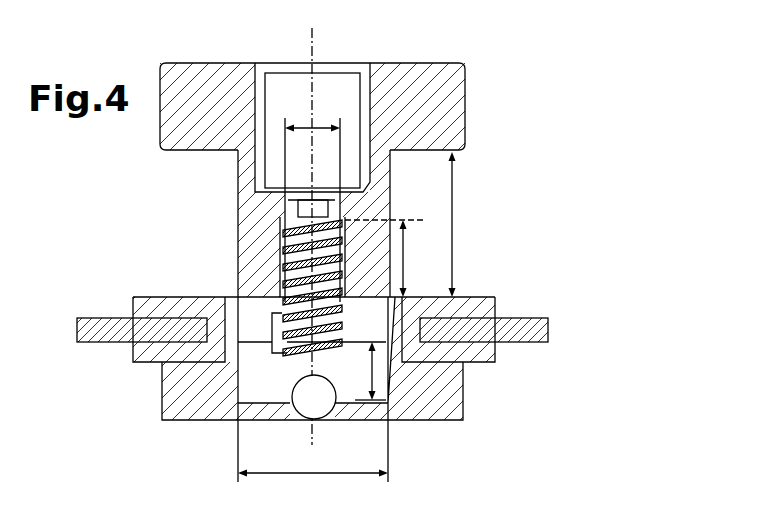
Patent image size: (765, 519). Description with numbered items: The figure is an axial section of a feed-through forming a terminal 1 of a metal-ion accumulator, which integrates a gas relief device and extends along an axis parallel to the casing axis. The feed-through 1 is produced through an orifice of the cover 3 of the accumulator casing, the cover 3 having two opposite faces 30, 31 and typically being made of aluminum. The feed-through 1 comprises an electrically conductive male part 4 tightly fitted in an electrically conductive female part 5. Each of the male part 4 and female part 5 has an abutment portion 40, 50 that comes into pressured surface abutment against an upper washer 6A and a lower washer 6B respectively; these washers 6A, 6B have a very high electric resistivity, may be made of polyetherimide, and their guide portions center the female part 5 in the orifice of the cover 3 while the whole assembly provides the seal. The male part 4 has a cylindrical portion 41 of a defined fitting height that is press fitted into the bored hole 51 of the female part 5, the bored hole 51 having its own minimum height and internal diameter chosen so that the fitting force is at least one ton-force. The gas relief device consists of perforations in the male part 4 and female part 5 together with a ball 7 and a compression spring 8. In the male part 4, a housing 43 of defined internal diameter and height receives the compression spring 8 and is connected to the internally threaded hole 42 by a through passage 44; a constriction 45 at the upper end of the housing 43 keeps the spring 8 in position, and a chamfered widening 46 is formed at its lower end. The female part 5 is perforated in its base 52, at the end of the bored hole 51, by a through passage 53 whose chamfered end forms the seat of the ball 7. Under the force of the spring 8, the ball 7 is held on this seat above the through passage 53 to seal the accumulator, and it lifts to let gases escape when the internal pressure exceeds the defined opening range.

The feed-through forming a terminal 1 is at (539, 194).
The cover 3 is at (95, 318).
The male part 4 is at (455, 88).
The female part 5 is at (452, 403).
The upper washer 6A is at (480, 297).
The lower washer 6B is at (493, 362).
The ball 7 is at (280, 410).
The compression spring 8 is at (277, 347).
The face of the cover 30 is at (535, 318).
The face of the cover 31 is at (112, 342).
The abutment portion of the male part 40 is at (176, 152).
The cylindrical portion 41 is at (392, 205).
The internally threaded hole 42 is at (253, 110).
The housing 43 is at (283, 252).
The through passage 44 is at (255, 195).
The constriction 45 is at (283, 214).
The chamfered widening 46 is at (283, 290).
The abutment portion of the female part 50 is at (235, 382).
The bored hole 51 is at (228, 388).
The base 52 is at (258, 405).
The through passage 53 is at (318, 410).